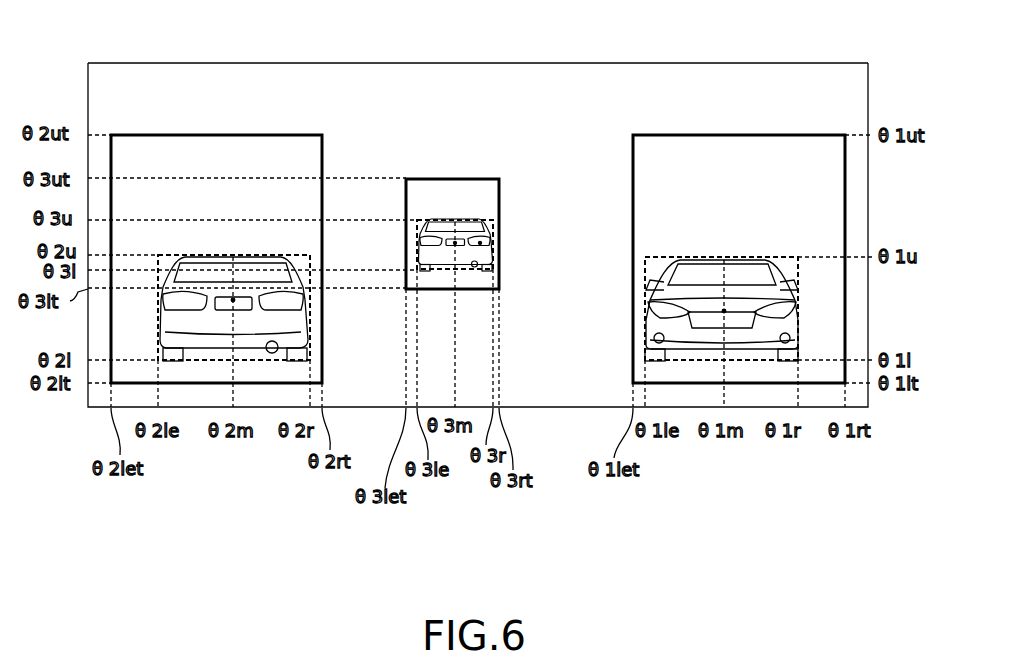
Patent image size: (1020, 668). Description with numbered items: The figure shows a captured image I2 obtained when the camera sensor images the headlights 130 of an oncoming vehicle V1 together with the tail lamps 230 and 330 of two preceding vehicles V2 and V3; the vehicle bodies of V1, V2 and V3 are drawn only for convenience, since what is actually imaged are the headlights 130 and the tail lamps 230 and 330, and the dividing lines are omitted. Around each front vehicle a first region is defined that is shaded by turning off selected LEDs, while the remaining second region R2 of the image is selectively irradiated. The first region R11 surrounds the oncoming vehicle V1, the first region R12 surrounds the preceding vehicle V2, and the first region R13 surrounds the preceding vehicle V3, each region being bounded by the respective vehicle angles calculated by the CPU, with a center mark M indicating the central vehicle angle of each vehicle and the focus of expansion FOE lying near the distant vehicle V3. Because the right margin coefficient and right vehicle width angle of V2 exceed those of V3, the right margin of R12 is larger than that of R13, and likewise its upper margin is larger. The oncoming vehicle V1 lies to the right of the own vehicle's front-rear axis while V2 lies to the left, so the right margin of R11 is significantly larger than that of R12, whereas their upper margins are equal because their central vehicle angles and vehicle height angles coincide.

The captured image I2 is at (128, 62).
The second region R2 is at (388, 73).
The first region of the oncoming vehicle R11 is at (781, 143).
The first region of the preceding vehicle V2 R12 is at (281, 143).
The first region of the preceding vehicle V3 R13 is at (477, 192).
The oncoming vehicle V1 is at (652, 282).
The preceding vehicle V2 is at (177, 258).
The preceding vehicle V3 is at (423, 222).
The center point of vehicle M is at (233, 300).
The focus of expansion FOE is at (480, 243).
The headlights 130 is at (650, 307).
The tail lamps 230 is at (298, 301).
The tail lamps 330 is at (478, 262).